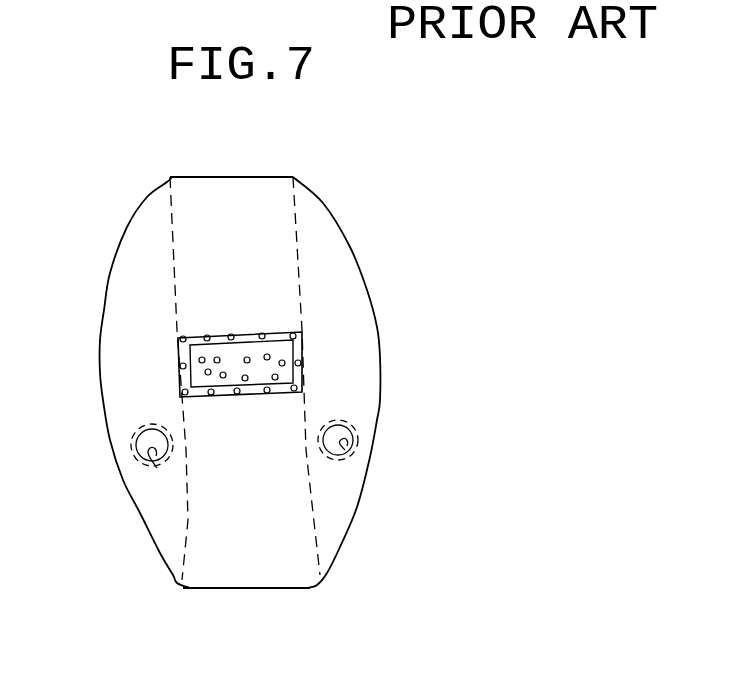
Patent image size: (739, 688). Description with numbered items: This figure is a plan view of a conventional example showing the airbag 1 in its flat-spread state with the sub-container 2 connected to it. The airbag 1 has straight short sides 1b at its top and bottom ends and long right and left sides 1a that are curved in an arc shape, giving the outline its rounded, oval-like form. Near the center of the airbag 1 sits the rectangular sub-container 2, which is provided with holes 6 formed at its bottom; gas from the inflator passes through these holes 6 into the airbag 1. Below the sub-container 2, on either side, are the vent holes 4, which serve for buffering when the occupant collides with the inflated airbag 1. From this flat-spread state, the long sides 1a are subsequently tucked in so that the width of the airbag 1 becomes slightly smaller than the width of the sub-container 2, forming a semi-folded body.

The airbag 1 is at (383, 393).
The long sides 1a is at (102, 373).
The short sides 1b is at (250, 177).
The sub-container 2 is at (305, 362).
The vent holes 4 is at (157, 468).
The holes 6 is at (283, 360).